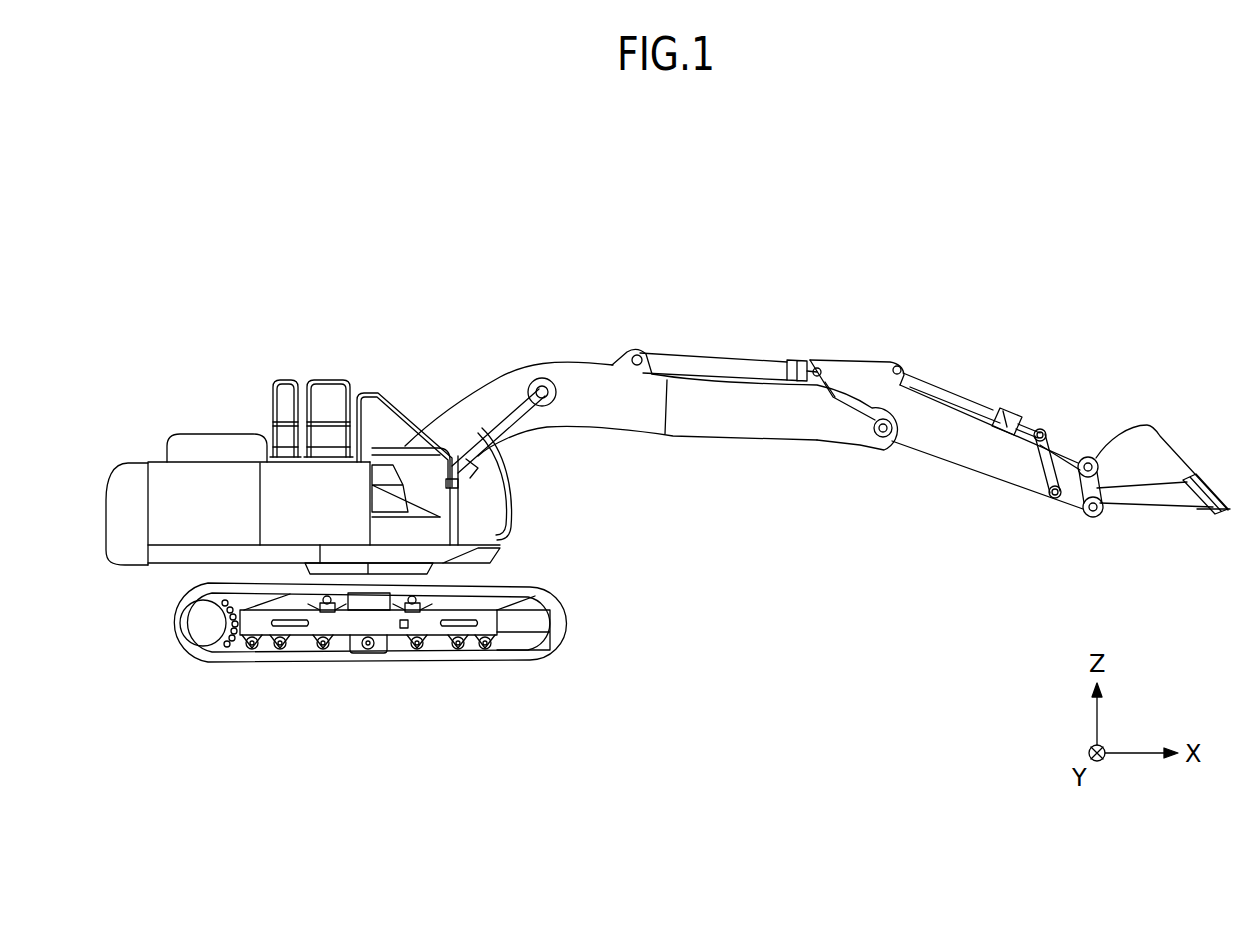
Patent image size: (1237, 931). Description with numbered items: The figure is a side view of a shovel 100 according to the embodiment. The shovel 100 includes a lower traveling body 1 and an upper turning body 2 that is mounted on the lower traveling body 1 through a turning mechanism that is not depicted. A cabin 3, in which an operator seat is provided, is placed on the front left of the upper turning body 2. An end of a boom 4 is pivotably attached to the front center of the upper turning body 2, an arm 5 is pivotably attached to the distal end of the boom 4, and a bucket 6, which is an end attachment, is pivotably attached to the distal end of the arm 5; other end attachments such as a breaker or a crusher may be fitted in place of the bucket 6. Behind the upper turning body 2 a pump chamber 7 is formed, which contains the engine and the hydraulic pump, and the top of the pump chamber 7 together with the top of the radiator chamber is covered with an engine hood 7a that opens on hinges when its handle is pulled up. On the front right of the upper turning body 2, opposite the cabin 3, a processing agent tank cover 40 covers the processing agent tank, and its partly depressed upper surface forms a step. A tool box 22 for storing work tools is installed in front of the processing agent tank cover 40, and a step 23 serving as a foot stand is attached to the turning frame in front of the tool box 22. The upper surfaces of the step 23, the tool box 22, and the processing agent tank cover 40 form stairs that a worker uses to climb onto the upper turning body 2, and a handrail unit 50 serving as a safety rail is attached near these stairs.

The shovel 100 is at (202, 282).
The lower traveling body 1 is at (573, 622).
The upper turning body 2 is at (126, 455).
The cabin 3 is at (425, 402).
The boom 4 is at (506, 392).
The arm 5 is at (995, 467).
The bucket 6 is at (1137, 440).
The pump chamber 7 is at (181, 487).
The engine hood 7a is at (233, 440).
The tool box 22 is at (433, 530).
The step 23 is at (492, 555).
The processing agent tank cover 40 is at (394, 470).
The handrail unit 50 is at (367, 376).